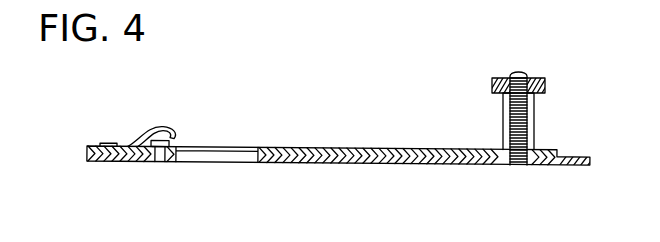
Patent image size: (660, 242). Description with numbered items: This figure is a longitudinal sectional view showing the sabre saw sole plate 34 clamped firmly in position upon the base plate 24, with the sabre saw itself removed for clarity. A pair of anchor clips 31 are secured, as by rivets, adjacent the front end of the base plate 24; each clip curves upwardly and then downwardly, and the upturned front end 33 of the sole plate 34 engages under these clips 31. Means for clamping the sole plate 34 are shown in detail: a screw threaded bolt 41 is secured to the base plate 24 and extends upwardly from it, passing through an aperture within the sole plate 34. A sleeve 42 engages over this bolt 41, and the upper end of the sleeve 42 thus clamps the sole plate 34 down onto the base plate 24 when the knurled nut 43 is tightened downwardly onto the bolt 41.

The base plate 24 is at (377, 164).
The anchor clips 31 is at (158, 126).
The upturned front end 33 is at (176, 141).
The sole plate 34 is at (318, 147).
The screw threaded bolt 41 is at (517, 72).
The sleeve 42 is at (503, 120).
The nut 43 is at (545, 83).